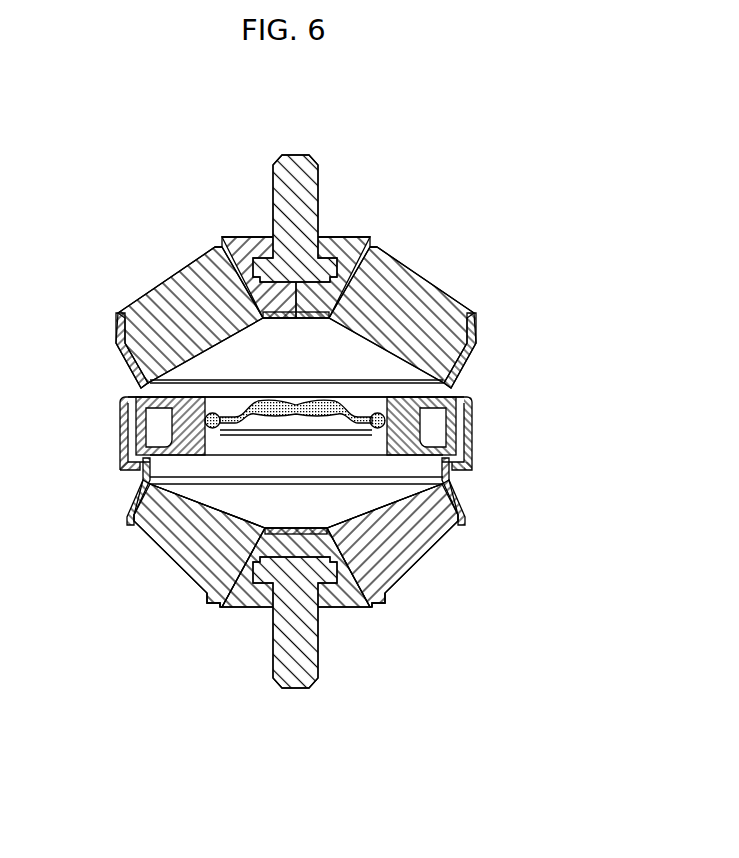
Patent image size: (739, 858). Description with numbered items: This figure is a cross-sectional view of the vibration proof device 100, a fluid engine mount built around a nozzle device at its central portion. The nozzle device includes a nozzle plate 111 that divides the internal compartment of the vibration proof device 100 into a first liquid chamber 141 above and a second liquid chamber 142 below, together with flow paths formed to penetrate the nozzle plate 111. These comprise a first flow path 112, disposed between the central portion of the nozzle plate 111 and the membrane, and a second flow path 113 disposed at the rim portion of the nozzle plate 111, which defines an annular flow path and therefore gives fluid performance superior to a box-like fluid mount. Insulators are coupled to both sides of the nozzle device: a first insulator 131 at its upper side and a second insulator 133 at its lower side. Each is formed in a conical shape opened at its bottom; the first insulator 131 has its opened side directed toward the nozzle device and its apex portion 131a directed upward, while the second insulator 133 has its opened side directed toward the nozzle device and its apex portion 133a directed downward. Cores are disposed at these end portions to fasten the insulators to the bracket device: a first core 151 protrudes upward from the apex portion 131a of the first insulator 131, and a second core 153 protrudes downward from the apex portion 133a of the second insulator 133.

The vibration proof device 100 is at (114, 131).
The nozzle plate 111 is at (407, 423).
The first flow path 112 is at (246, 402).
The second flow path 113 is at (168, 424).
The first insulator 131 is at (410, 297).
The apex portion 131a is at (348, 240).
The second insulator 133 is at (190, 540).
The apex portion 133a is at (348, 597).
The first liquid chamber 141 is at (240, 357).
The second liquid chamber 142 is at (338, 500).
The first core 151 is at (298, 168).
The second core 153 is at (295, 657).